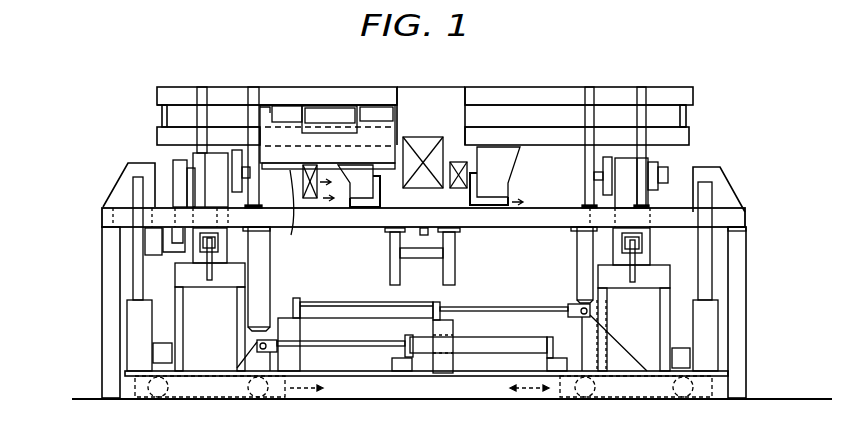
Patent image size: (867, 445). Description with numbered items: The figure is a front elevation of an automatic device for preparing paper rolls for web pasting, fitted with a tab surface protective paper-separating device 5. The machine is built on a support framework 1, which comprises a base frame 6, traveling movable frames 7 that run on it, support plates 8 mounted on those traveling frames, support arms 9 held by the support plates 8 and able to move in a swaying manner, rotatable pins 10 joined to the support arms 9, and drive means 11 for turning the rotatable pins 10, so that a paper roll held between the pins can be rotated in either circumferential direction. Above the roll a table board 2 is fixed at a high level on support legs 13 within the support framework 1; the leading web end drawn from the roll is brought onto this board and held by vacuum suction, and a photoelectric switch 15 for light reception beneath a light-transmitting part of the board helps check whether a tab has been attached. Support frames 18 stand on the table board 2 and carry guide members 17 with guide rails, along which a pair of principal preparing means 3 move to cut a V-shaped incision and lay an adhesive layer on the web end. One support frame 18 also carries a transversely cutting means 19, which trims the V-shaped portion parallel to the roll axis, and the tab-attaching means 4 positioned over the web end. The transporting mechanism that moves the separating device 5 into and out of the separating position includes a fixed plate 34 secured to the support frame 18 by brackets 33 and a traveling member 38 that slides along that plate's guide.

The support framework 1 is at (681, 276).
The table board 2 is at (394, 207).
The principal preparing means 3 is at (357, 209).
The tab-attaching means 4 is at (427, 136).
The tab surface protective paper-separating device 5 is at (312, 200).
The base frame 6 is at (397, 378).
The traveling movable frames 7 is at (208, 399).
The support plates 8 is at (237, 318).
The support arms 9 is at (218, 166).
The rotatable pins 10 is at (247, 174).
The drive means 11 is at (155, 242).
The support legs 13 is at (270, 280).
The photoelectric switch for light reception 15 is at (424, 236).
The guide members 17 is at (332, 128).
The support frames 18 is at (185, 97).
The transversely cutting means 19 is at (457, 191).
The brackets 33 is at (282, 104).
The fixed plate 34 is at (287, 146).
The traveling member 38 is at (289, 216).